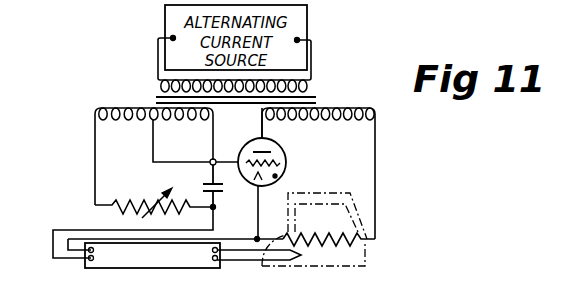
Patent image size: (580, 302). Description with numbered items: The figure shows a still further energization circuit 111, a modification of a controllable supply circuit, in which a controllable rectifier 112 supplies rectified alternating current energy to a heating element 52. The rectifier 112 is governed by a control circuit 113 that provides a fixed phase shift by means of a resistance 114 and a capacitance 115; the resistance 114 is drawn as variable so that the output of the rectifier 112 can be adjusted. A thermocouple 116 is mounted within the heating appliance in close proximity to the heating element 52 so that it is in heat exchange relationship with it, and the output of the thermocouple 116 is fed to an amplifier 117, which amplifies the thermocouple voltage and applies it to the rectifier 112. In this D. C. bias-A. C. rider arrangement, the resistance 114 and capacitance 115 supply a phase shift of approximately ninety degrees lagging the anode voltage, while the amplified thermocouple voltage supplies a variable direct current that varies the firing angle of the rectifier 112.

The heating element 52 is at (352, 244).
The energization circuit 111 is at (405, 163).
The controllable rectifier 112 is at (288, 161).
The control circuit 113 is at (143, 190).
The resistance 114 is at (120, 210).
The capacitance 115 is at (211, 183).
The thermocouple 116 is at (287, 262).
The amplifier 117 is at (205, 268).